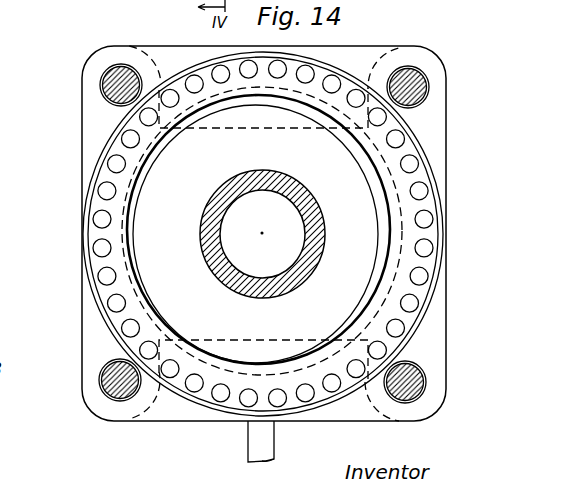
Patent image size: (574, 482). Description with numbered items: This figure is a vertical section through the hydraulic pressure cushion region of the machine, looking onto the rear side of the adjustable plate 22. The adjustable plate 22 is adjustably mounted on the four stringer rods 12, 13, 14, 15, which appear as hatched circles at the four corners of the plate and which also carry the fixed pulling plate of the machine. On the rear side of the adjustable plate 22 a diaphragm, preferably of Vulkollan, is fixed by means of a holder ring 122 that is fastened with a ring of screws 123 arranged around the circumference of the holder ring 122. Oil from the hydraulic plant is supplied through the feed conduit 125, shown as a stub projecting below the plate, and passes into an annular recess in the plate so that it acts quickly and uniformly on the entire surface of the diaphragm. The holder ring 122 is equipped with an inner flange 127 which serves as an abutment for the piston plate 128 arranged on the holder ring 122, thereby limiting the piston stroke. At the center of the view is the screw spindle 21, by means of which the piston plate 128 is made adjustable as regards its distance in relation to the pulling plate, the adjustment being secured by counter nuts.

The stringer rod 12 is at (110, 79).
The stringer rod 13 is at (424, 91).
The stringer rod 14 is at (105, 382).
The stringer rod 15 is at (412, 384).
The screw spindle 21 is at (210, 220).
The adjustable plate 22 is at (95, 146).
The holder ring 122 is at (420, 175).
The screws 123 is at (428, 272).
The feed conduit 125 is at (258, 444).
The inner flange 127 is at (388, 297).
The piston plate 128 is at (160, 272).